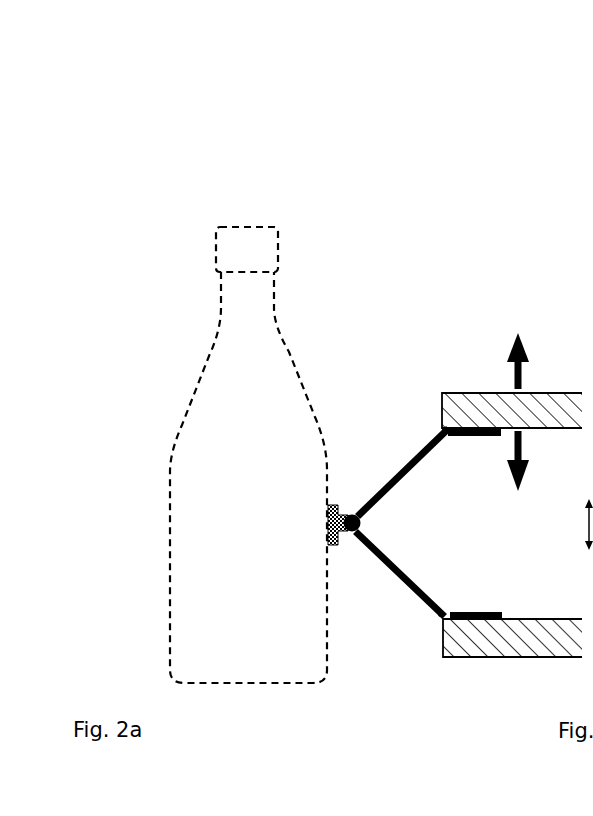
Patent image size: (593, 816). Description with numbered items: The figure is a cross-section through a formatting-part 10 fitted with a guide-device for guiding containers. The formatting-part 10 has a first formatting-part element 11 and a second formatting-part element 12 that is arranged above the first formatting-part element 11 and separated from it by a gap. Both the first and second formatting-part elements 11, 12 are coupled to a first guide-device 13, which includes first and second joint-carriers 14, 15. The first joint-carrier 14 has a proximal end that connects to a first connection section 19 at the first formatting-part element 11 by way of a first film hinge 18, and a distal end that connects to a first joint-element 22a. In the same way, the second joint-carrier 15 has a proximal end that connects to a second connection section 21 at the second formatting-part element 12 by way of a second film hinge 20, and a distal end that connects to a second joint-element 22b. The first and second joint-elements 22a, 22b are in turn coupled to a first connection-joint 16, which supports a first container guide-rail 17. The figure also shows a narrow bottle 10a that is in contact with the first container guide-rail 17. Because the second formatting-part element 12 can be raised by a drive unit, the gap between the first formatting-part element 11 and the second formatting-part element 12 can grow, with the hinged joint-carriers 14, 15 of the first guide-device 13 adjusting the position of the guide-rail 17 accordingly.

The formatting-part 10 is at (444, 215).
The narrow bottle 10a is at (165, 333).
The first formatting-part element 11 is at (468, 650).
The second formatting-part element 12 is at (558, 410).
The first guide-device 13 is at (366, 438).
The first joint-carrier 14 is at (398, 562).
The second joint-carrier 15 is at (416, 464).
The first connection-joint 16 is at (364, 524).
The first container guide-rail 17 is at (333, 545).
The first film hinge 18 is at (438, 615).
The first connection section 19 is at (493, 612).
The second film hinge 20 is at (441, 428).
The second connection section 21 is at (473, 438).
The first joint-element 22a is at (363, 537).
The second joint-element 22b is at (358, 508).